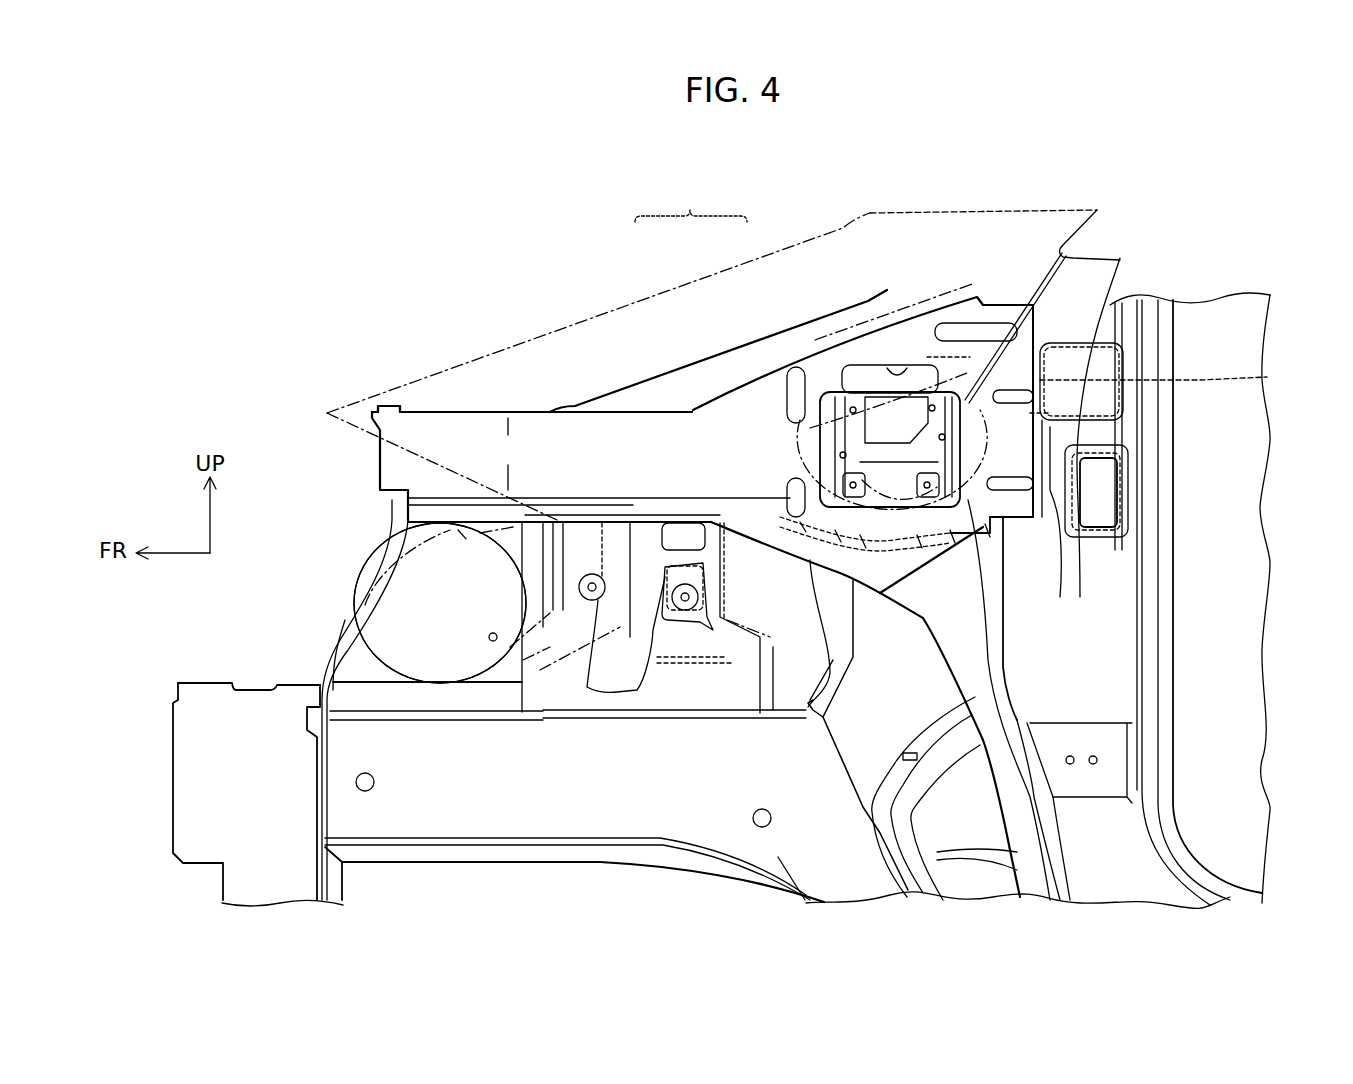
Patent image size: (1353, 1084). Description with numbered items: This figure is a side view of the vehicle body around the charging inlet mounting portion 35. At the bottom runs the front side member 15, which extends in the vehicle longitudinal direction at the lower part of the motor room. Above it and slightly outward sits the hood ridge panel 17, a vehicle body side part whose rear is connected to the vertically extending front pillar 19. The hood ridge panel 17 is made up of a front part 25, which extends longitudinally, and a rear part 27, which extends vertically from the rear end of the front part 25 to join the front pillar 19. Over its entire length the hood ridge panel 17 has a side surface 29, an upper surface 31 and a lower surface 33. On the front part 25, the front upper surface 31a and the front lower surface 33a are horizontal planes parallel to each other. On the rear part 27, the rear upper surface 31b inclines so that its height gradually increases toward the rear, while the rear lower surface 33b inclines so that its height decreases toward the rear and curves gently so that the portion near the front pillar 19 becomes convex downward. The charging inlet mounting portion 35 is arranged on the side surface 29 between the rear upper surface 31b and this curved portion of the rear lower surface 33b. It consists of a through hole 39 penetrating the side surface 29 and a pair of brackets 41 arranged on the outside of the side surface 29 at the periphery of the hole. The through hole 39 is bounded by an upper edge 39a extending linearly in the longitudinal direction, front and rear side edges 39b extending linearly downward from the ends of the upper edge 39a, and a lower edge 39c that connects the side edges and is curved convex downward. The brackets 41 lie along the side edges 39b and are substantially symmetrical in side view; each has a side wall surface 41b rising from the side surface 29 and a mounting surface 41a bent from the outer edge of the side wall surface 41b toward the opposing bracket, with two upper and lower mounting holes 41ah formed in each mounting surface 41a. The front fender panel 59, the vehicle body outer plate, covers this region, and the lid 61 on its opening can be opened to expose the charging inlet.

The front side member 15 is at (543, 826).
The hood ridge panel 17 is at (691, 201).
The front pillar 19 is at (1103, 687).
The front part 25 is at (647, 437).
The rear part 27 is at (810, 322).
The side surface 29 is at (675, 505).
The upper surface 31 is at (460, 407).
The front upper surface 31a is at (460, 407).
The rear upper surface 31b is at (905, 355).
The lower surface 33 is at (477, 500).
The front lower surface 33a is at (477, 500).
The rear lower surface 33b is at (925, 548).
The charging inlet mounting portion 35 is at (1262, 380).
The through hole 39 is at (908, 368).
The upper edge 39a is at (908, 368).
The front and rear side edges 39b is at (852, 362).
The lower edge 39c is at (888, 520).
The bracket 41 is at (820, 428).
The mounting surface 41a is at (822, 485).
The mounting hole 41ah is at (1065, 257).
The side wall surface 41b is at (838, 453).
The front fender panel 59 is at (580, 318).
The lid 61 is at (1035, 325).